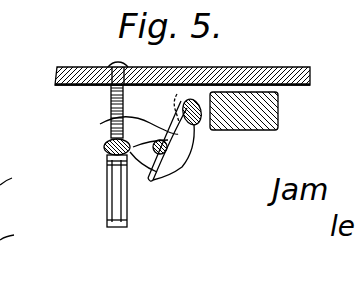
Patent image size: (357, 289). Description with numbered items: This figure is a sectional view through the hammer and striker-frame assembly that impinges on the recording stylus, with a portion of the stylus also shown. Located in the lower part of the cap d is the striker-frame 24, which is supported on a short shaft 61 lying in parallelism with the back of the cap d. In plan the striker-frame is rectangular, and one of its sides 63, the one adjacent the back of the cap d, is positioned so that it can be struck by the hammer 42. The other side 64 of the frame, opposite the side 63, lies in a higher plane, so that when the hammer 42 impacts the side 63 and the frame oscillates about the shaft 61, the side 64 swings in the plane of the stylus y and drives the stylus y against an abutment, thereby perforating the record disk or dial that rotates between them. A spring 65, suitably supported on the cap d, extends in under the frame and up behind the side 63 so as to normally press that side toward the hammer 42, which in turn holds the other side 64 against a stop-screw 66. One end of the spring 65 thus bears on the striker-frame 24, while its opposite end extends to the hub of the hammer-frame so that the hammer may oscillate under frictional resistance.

The cap d is at (272, 67).
The hammer 42 is at (280, 112).
The spring 65 is at (111, 115).
The stop-screw 66 is at (110, 125).
The other side of the striker-frame 64 is at (106, 150).
The stylus y is at (99, 211).
The short shaft 61 is at (158, 154).
The side of the striker-frame 63 is at (198, 127).
The striker-frame 24 is at (173, 167).